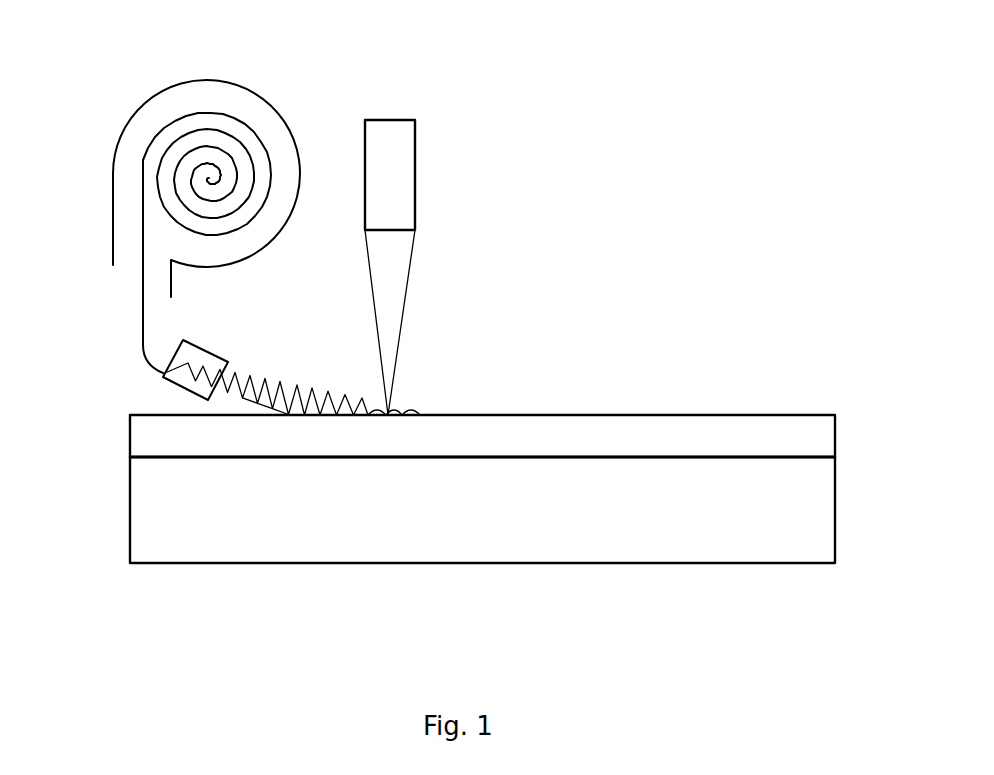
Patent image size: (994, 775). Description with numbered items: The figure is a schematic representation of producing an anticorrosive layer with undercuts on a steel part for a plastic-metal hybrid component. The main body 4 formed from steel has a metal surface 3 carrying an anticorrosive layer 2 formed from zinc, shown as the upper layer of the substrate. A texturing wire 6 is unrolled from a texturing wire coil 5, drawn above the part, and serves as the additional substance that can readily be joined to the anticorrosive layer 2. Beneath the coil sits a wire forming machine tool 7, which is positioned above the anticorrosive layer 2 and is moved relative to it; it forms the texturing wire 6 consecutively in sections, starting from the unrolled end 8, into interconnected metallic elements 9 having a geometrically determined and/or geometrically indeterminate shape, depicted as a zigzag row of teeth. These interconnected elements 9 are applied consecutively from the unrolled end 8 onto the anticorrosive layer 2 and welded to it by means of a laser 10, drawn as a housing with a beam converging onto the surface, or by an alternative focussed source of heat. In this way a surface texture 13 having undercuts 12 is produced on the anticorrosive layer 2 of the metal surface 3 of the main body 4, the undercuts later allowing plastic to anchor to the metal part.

The anticorrosive layer 2 is at (515, 432).
The metal surface 3 is at (640, 455).
The main body 4 is at (735, 492).
The texturing wire coil 5 is at (237, 140).
The texturing wire 6 is at (143, 308).
The wire forming machine tool 7 is at (163, 370).
The unrolled end 8 is at (388, 415).
The interconnected metallic elements 9 is at (232, 406).
The laser 10 is at (407, 298).
The undercuts 12 is at (275, 408).
The surface texture 13 is at (407, 415).